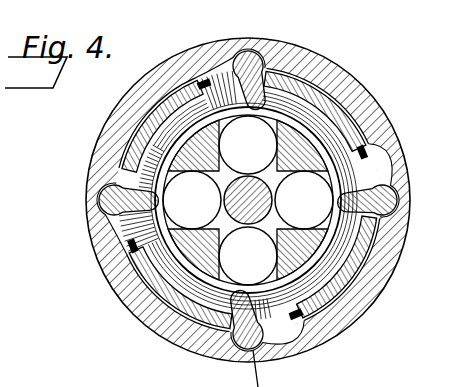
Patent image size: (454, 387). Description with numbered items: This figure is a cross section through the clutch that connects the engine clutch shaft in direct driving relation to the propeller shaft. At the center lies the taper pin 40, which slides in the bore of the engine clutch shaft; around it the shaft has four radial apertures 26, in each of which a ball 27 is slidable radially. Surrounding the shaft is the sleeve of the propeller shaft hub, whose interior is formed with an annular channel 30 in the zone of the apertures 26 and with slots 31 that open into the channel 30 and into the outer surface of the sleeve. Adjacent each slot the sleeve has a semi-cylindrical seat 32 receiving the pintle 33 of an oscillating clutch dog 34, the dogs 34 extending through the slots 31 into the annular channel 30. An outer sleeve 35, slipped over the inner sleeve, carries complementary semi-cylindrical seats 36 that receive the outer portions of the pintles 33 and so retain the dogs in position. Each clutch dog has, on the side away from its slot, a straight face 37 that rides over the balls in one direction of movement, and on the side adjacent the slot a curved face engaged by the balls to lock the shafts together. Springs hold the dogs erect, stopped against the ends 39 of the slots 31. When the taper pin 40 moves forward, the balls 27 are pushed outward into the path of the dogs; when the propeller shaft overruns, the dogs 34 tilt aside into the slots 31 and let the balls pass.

The radial apertures 26 is at (280, 122).
The balls 27 is at (172, 133).
The annular channel 30 is at (327, 147).
The slots 31 is at (215, 70).
The semi-cylindrical seats 32 is at (232, 62).
The pintles 33 is at (398, 200).
The clutch dogs 34 is at (372, 237).
The outer sleeve 35 is at (342, 326).
The semi-cylindrical seats 36 is at (402, 207).
The straight face 37 is at (140, 185).
The ends of the slots 39 is at (293, 48).
The taper pin 40 is at (262, 197).